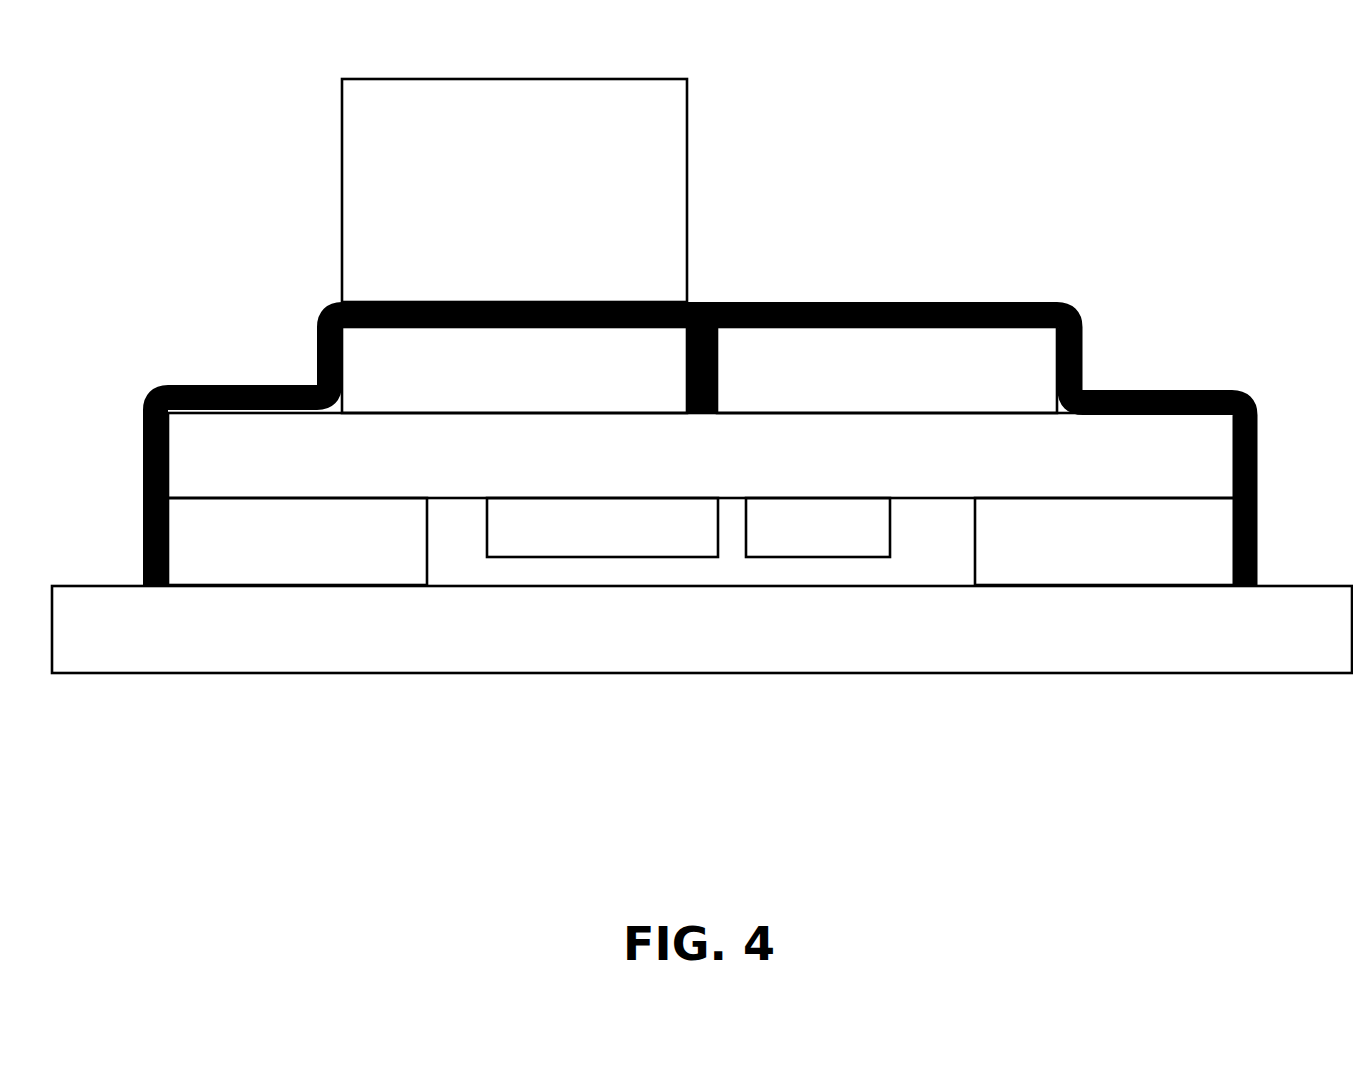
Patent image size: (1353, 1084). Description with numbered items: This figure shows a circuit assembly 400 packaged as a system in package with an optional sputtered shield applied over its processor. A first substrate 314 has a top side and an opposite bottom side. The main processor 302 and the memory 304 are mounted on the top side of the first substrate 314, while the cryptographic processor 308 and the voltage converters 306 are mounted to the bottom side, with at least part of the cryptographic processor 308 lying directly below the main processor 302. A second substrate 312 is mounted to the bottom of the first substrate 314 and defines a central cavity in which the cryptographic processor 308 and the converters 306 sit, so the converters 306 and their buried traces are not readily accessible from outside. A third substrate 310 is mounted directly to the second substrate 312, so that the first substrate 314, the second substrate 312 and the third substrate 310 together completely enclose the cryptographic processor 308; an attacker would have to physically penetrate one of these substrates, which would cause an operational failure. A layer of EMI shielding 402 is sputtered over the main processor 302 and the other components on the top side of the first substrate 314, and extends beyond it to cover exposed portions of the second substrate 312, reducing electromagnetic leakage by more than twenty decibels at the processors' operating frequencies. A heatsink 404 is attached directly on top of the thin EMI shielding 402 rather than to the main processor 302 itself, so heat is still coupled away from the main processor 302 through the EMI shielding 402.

The circuit assembly 400 is at (1300, 130).
The EMI shielding 402 is at (853, 302).
The heatsink 404 is at (493, 217).
The main processor 302 is at (491, 394).
The memory 304 is at (865, 394).
The first substrate 314 is at (680, 482).
The second substrate 312 is at (275, 567).
The cryptographic processor 308 is at (487, 546).
The voltage converters 306 is at (890, 540).
The third substrate 310 is at (392, 674).